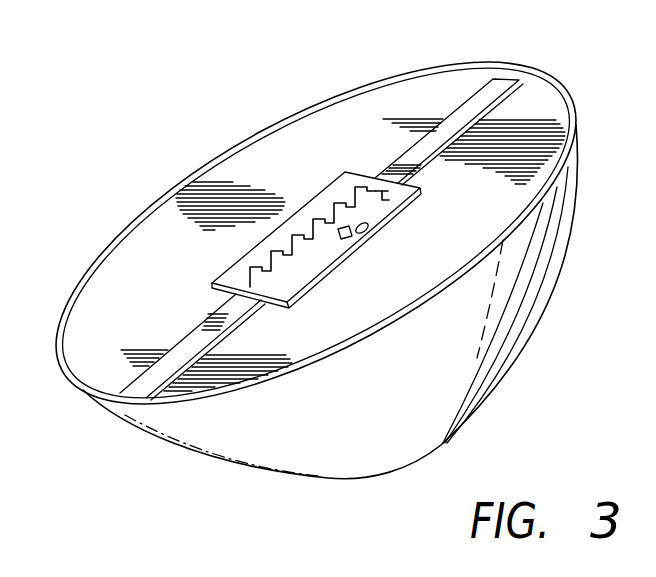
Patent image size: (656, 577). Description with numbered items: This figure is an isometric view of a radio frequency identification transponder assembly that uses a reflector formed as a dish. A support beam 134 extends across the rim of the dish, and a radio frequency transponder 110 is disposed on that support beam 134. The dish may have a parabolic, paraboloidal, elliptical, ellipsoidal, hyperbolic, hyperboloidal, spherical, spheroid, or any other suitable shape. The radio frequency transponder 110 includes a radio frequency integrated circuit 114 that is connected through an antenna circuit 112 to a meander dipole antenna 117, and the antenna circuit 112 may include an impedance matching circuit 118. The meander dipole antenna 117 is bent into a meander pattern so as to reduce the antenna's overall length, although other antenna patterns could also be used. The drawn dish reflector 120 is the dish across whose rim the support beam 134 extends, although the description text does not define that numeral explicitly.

The antenna assembly 110 is at (260, 181).
The substrate / circuit board 112 is at (243, 275).
The feed point connector 114 is at (365, 228).
The feed line 117 is at (398, 203).
The meander line element 118 is at (333, 194).
The parabolic reflector dish 120 is at (182, 453).
The support strip 134 is at (471, 107).